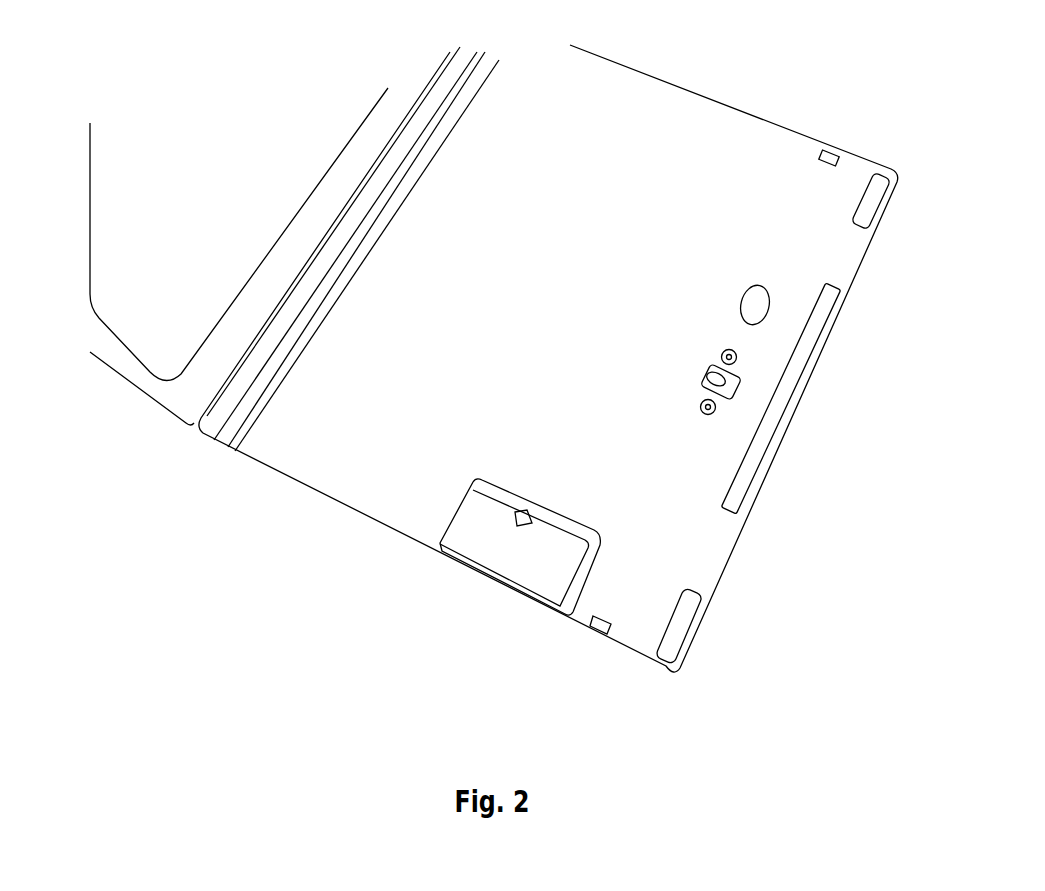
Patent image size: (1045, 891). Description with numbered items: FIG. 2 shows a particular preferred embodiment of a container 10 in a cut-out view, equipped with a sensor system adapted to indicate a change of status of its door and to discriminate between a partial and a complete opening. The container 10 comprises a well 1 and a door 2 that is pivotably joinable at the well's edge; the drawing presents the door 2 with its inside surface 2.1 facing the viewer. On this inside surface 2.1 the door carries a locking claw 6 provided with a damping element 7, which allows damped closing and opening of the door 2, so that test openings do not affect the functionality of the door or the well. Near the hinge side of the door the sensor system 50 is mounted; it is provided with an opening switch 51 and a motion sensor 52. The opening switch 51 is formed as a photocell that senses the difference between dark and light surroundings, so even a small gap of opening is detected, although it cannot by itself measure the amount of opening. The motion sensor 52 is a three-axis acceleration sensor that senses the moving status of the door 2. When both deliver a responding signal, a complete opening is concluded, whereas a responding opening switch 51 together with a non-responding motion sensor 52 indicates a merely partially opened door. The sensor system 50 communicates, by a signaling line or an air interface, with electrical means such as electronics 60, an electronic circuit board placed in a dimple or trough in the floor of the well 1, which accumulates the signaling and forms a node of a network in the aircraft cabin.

The well 1 is at (110, 352).
The door 2 is at (780, 162).
The inside surface 2.1 is at (670, 171).
The locking claw 6 is at (690, 389).
The damping element 7 is at (713, 375).
The container 10 is at (184, 505).
The sensor system 50 is at (443, 563).
The opening switch 51 is at (548, 592).
The motion sensor 52 is at (587, 565).
The electronics 60 is at (239, 234).